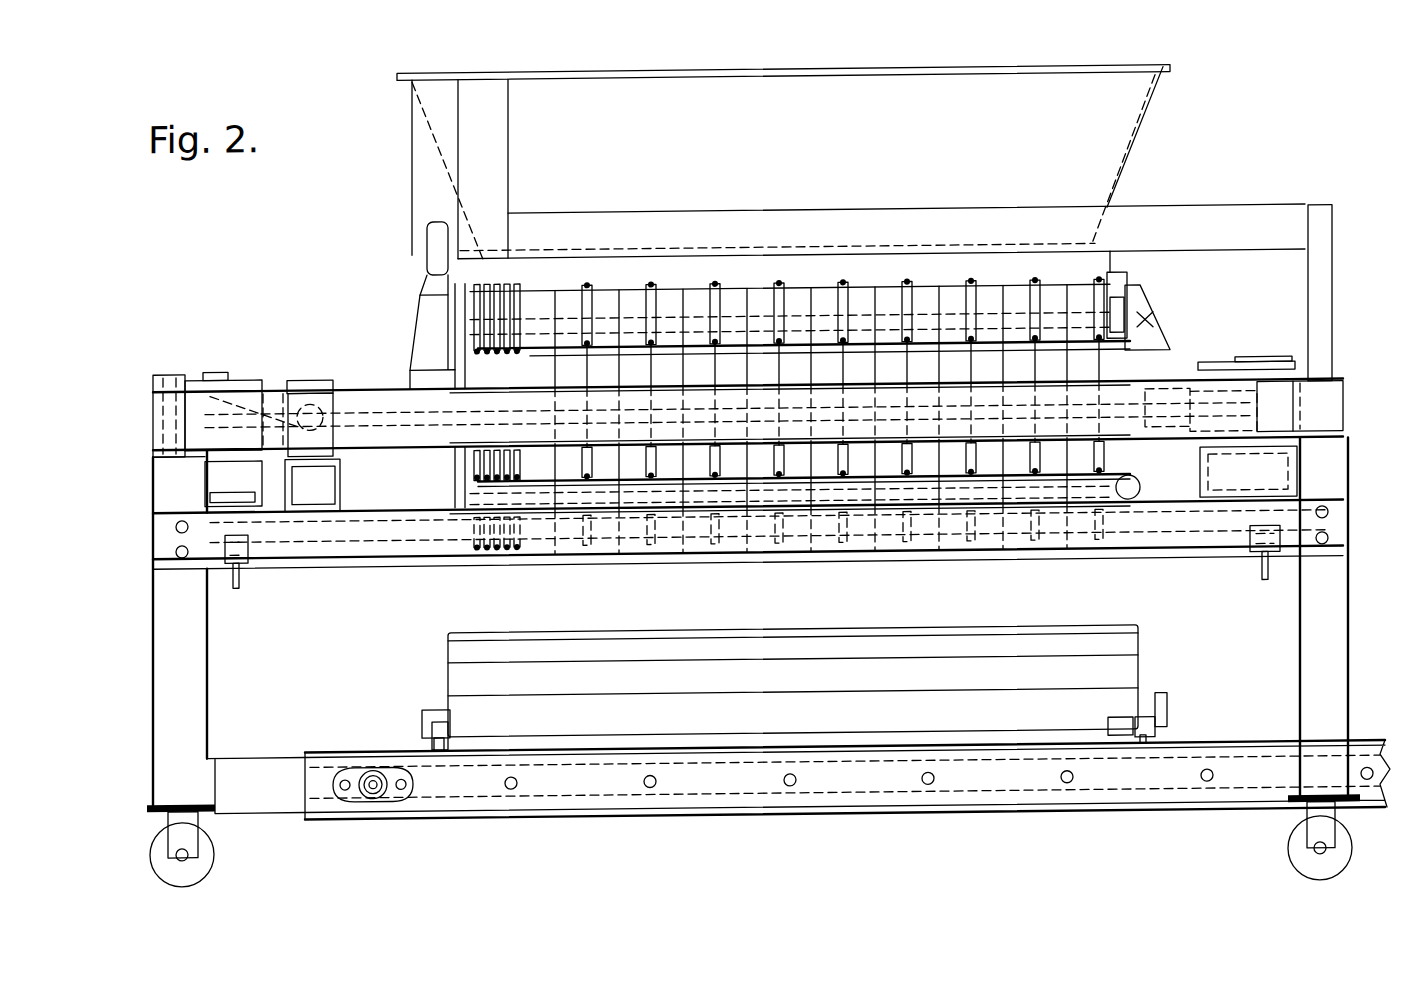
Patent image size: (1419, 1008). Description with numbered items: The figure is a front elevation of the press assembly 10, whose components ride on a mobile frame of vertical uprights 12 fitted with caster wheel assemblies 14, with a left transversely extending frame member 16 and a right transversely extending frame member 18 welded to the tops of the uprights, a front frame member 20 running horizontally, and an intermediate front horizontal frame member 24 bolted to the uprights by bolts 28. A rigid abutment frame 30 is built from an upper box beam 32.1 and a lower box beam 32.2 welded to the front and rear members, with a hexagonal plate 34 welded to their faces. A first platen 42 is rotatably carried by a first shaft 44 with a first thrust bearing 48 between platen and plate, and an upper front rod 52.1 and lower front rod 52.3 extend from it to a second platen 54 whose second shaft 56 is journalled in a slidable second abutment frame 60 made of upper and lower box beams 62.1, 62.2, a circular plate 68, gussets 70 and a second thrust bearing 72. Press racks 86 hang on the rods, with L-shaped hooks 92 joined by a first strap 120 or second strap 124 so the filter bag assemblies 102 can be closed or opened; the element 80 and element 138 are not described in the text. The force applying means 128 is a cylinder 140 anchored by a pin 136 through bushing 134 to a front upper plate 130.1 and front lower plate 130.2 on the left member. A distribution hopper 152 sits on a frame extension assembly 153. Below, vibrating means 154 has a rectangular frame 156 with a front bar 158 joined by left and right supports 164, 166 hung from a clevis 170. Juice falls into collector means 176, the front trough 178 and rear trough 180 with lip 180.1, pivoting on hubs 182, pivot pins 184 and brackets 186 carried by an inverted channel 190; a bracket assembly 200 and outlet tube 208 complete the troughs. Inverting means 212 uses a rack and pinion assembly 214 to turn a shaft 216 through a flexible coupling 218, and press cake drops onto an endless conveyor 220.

The press assembly 10 is at (1300, 160).
The vertical upright 12 is at (153, 690).
The caster wheel assembly 14 is at (218, 862).
The left transversely extending frame member 16 is at (155, 420).
The right transversely extending frame member 18 is at (1345, 425).
The front frame member 20 is at (385, 400).
The intermediate front horizontal frame member 24 is at (165, 550).
The bolts 28 is at (176, 529).
The rigid abutment frame 30 is at (405, 277).
The upper box beam 32.1 is at (410, 345).
The lower box beam 32.2 is at (330, 480).
The hexagonal plate 34 is at (430, 280).
The first platen 42 is at (430, 520).
The first shaft 44 is at (410, 448).
The first thrust bearing 48 is at (470, 560).
The upper front rod 52.1 is at (800, 340).
The lower front rod 52.3 is at (805, 572).
The second platen 54 is at (1120, 320).
The second shaft 56 is at (1195, 412).
The slidable second abutment frame 60 is at (1180, 305).
The upper box beam 62.1 is at (1240, 378).
The lower box beam 62.2 is at (1140, 498).
The circular plate 68 is at (1130, 298).
The gussets 70 is at (1150, 340).
The second thrust bearing 72 is at (1112, 288).
The pivot 80 is at (1178, 300).
The press racks 86 is at (592, 292).
The L-shaped hooks 92 is at (717, 297).
The filter bag assemblies 102 is at (732, 292).
The first strap 120 is at (455, 387).
The second strap 124 is at (775, 300).
The force applying means 128 is at (262, 385).
The front upper plate 130.1 is at (258, 386).
The front lower plate 130.2 is at (232, 484).
The bushing 134 is at (153, 378).
The pin 136 is at (195, 386).
The end cap 138 is at (152, 440).
The cylinder 140 is at (290, 386).
The distribution hopper 152 is at (1150, 135).
The frame extension assembly 153 is at (1285, 225).
The vibrating means 154 is at (305, 578).
The rectangular frame 156 is at (330, 572).
The front bar 158 is at (515, 572).
The left transversely extending support 164 is at (236, 591).
The right transversely extending support 166 is at (1265, 594).
The clevis 170 is at (250, 548).
The collector means 176 is at (1085, 625).
The front trough 178 is at (975, 640).
The rear trough 180 is at (1060, 640).
The lip 180.1 is at (670, 640).
The concentric hubs 182 is at (470, 733).
The pivot pins 184 is at (1100, 740).
The brackets 186 is at (437, 715).
The inverted channel 190 is at (265, 755).
The bracket assembly 200 is at (1168, 720).
The outlet tube 208 is at (422, 718).
The inverting means 212 is at (325, 500).
The rack and pinion assembly 214 is at (312, 390).
The shaft 216 is at (320, 402).
The flexible coupling 218 is at (380, 415).
The endless conveyor 220 is at (412, 824).